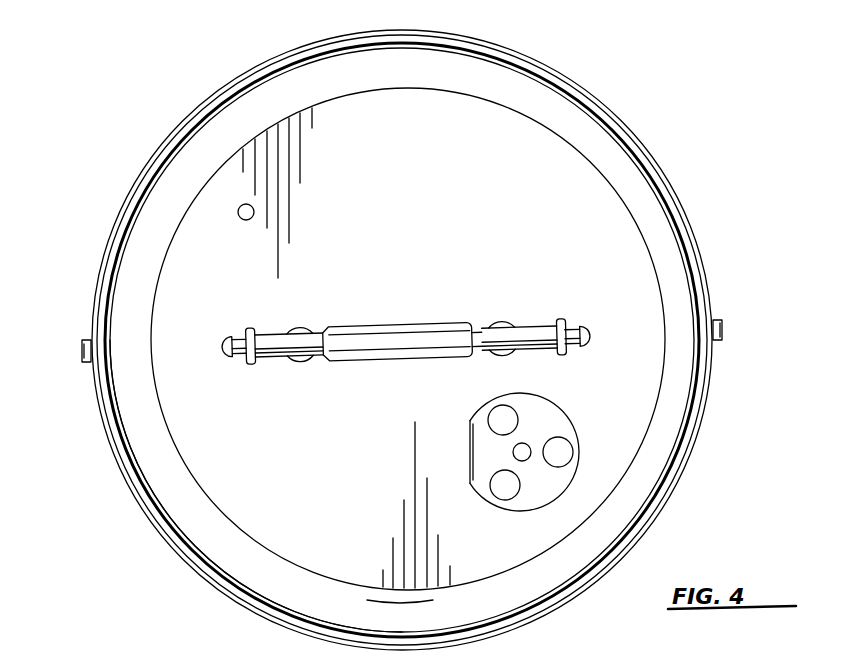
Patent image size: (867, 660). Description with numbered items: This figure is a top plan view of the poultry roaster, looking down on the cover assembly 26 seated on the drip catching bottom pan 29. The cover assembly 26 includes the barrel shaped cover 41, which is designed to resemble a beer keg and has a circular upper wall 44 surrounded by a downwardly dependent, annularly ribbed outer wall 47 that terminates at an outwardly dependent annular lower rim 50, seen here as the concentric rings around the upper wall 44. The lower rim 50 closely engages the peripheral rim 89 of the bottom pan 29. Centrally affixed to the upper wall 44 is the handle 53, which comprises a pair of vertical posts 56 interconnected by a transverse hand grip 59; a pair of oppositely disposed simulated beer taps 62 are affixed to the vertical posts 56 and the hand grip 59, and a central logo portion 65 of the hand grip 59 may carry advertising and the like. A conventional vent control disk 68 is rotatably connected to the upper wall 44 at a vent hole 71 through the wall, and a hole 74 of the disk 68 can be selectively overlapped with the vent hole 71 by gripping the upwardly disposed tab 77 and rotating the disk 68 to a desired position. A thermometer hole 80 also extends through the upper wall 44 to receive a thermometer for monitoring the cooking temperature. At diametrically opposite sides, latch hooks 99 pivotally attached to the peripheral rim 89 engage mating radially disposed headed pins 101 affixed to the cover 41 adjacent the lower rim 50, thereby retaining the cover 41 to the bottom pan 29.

The cover assembly 26 is at (625, 120).
The bottom pan 29 is at (193, 117).
The cover 41 is at (503, 88).
The upper wall 44 is at (447, 202).
The outer wall 47 is at (668, 205).
The lower rim 50 is at (472, 42).
The handle 53 is at (406, 322).
The vertical posts 56 is at (302, 330).
The hand grip 59 is at (455, 315).
The simulated beer taps 62 is at (218, 355).
The central logo portion 65 is at (412, 355).
The vent control disk 68 is at (578, 448).
The vent hole 71 is at (500, 410).
The hole 74 is at (545, 417).
The tab 77 is at (470, 443).
The thermometer hole 80 is at (238, 208).
The peripheral rim 89 is at (132, 500).
The latch hooks 99 is at (84, 363).
The headed pins 101 is at (82, 345).